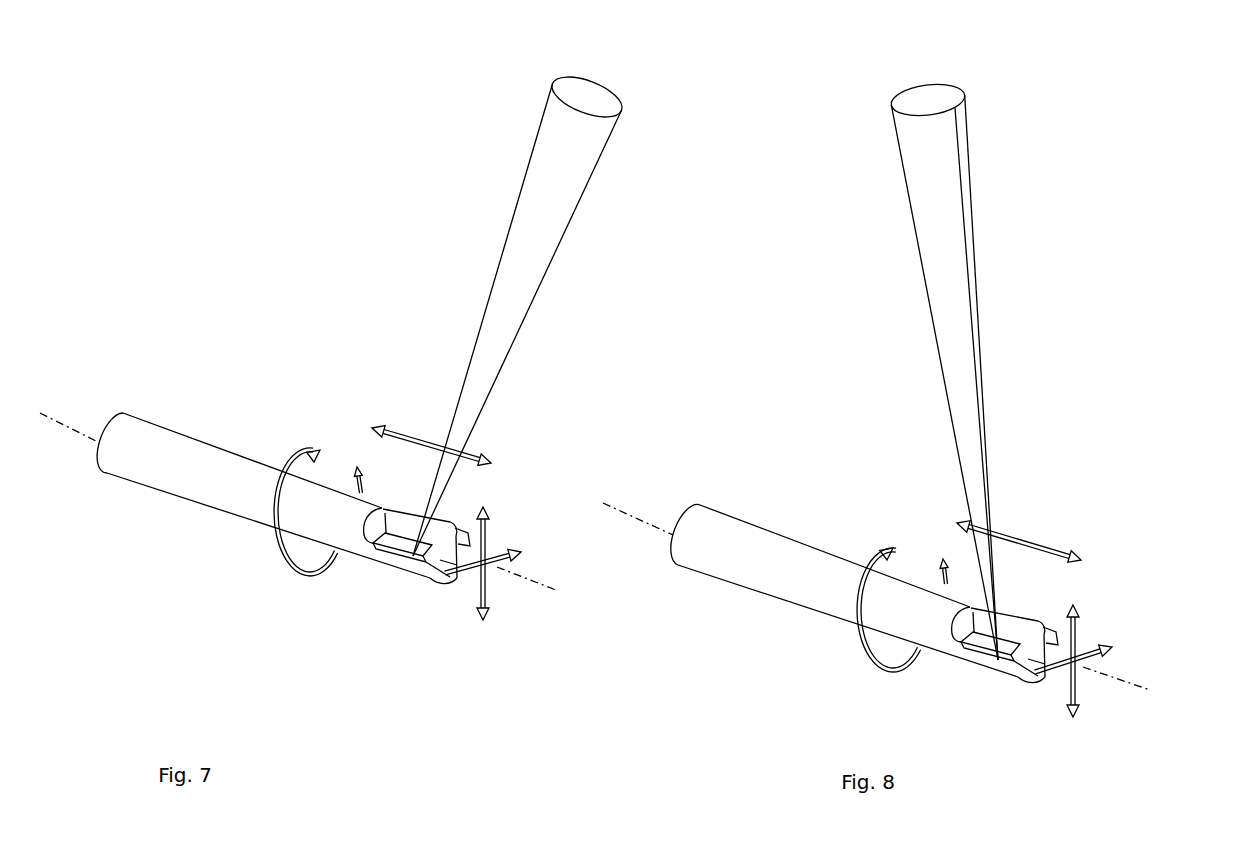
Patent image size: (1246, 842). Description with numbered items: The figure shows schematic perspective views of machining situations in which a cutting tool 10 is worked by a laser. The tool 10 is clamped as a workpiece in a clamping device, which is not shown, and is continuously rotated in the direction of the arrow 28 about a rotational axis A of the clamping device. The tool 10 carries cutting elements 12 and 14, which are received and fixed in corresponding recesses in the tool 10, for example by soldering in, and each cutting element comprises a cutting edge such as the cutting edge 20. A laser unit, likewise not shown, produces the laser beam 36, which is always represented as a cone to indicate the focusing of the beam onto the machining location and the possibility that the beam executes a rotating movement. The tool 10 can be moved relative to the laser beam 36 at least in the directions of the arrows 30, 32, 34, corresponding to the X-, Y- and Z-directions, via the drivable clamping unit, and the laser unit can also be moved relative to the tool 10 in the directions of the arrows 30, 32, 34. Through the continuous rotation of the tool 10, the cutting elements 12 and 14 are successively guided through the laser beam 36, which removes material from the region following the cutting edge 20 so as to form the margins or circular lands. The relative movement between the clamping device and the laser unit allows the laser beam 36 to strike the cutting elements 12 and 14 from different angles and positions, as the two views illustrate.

In FIG. 7, the cutting tool 10 is at (152, 437).
In FIG. 8, the cutting tool 10 is at (705, 513).
In FIG. 7, the cutting element 12 is at (415, 552).
In FIG. 8, the cutting element 12 is at (1005, 656).
In FIG. 7, the cutting element 14 is at (458, 565).
In FIG. 8, the cutting element 14 is at (1048, 665).
In FIG. 7, the cutting edge 20 is at (372, 545).
In FIG. 8, the cutting edge 20 is at (978, 652).
In FIG. 7, the arrow 28 is at (305, 458).
In FIG. 8, the arrow 28 is at (893, 553).
In FIG. 7, the arrow 30 is at (490, 462).
In FIG. 8, the arrow 30 is at (1020, 537).
In FIG. 7, the arrow 32 is at (492, 517).
In FIG. 8, the arrow 32 is at (1085, 607).
In FIG. 7, the arrow 34 is at (517, 552).
In FIG. 8, the arrow 34 is at (1113, 648).
In FIG. 7, the laser beam 36 is at (582, 117).
In FIG. 8, the laser beam 36 is at (953, 193).
In FIG. 7, the rotational axis A is at (82, 425).
In FIG. 8, the rotational axis A is at (645, 518).